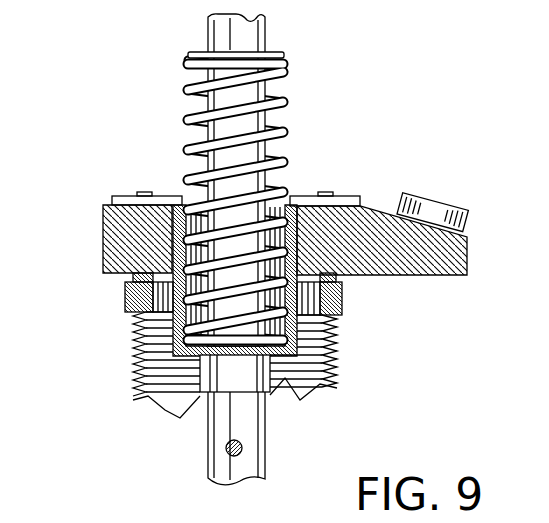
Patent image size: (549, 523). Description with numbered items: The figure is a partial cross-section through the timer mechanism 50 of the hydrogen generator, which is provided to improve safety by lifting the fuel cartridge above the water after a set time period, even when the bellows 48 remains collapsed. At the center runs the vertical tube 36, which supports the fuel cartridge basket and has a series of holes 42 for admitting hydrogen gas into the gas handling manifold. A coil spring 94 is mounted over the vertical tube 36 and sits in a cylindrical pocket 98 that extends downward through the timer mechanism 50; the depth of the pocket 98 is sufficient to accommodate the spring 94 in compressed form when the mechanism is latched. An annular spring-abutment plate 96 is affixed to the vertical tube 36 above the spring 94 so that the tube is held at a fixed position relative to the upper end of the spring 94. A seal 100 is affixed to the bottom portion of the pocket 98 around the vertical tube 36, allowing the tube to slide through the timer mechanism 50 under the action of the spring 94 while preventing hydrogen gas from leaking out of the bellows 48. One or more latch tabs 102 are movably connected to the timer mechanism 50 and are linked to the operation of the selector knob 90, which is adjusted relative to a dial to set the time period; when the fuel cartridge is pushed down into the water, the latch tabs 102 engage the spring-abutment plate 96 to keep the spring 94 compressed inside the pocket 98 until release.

The vertical tube 36 is at (207, 33).
The annular spring-abutment plate 96 is at (285, 54).
The coil spring 94 is at (285, 101).
The latch tabs 102 is at (127, 195).
The knob 90 is at (440, 203).
The timer mechanism 50 is at (103, 232).
The cylindrical pocket 98 is at (168, 330).
The bellows 48 is at (332, 350).
The seal 100 is at (200, 372).
The holes 42 is at (244, 450).